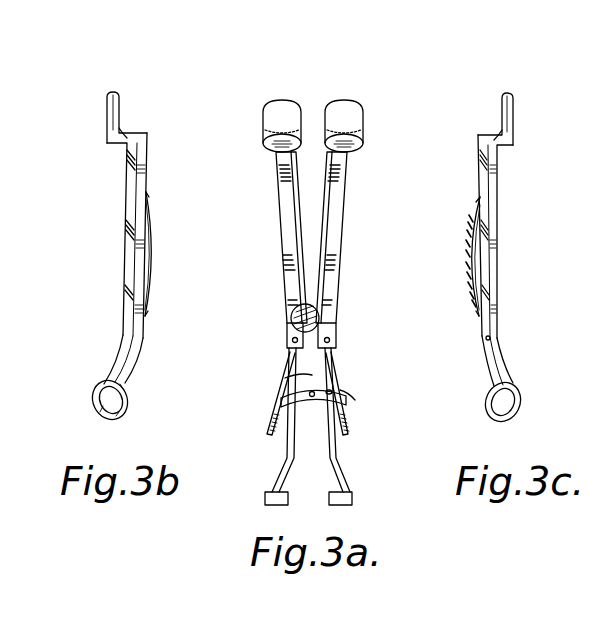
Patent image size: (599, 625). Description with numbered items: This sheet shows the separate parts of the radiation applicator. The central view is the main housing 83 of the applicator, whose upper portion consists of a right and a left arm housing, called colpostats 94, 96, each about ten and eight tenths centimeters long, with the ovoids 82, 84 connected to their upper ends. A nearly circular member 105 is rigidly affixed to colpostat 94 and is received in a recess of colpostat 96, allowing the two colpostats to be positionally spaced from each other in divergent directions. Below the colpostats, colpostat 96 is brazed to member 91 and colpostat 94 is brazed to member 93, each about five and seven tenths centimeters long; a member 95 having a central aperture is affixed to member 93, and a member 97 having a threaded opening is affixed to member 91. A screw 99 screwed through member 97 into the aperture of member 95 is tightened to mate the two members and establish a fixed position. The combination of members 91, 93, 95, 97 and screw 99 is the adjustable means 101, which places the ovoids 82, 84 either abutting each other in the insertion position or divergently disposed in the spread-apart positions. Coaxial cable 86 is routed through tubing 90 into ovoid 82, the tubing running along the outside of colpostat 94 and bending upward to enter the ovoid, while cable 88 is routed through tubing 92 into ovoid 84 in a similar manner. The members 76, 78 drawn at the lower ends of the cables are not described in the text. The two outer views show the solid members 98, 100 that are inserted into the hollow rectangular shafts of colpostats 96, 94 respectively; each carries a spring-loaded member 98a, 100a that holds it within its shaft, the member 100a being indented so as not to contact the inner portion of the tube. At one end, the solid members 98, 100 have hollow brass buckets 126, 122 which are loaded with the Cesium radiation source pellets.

In FIG. 3A, the foot pad 76 is at (352, 498).
In FIG. 3A, the foot pad 78 is at (265, 498).
In FIG. 3A, the ovoid 82 is at (346, 101).
In FIG. 3A, the main housing 83 is at (392, 96).
In FIG. 3A, the ovoid 84 is at (276, 101).
In FIG. 3A, the coaxial cable 86 is at (338, 471).
In FIG. 3A, the cable 88 is at (287, 471).
In FIG. 3A, the tubing 90 is at (338, 180).
In FIG. 3A, the member 91 is at (273, 402).
In FIG. 3A, the tubing 92 is at (282, 180).
In FIG. 3A, the member 93 is at (348, 402).
In FIG. 3A, the arm 94 is at (340, 238).
In FIG. 3A, the member 95 is at (340, 379).
In FIG. 3A, the colpostat 96 is at (283, 238).
In FIG. 3A, the member 97 is at (290, 367).
In FIG. 3B, the solid member 98 is at (106, 230).
In FIG. 3B, the spring-loaded member 98a is at (152, 276).
In FIG. 3A, the screw 99 is at (312, 400).
In FIG. 3C, the solid member 100 is at (509, 244).
In FIG. 3C, the spring-loaded member 100a is at (468, 264).
In FIG. 3A, the adjustable means 101 is at (238, 381).
In FIG. 3A, the nearly circular member 105 is at (305, 312).
In FIG. 3C, the hollow bucket 122 is at (508, 92).
In FIG. 3B, the hollow bucket 126 is at (112, 90).